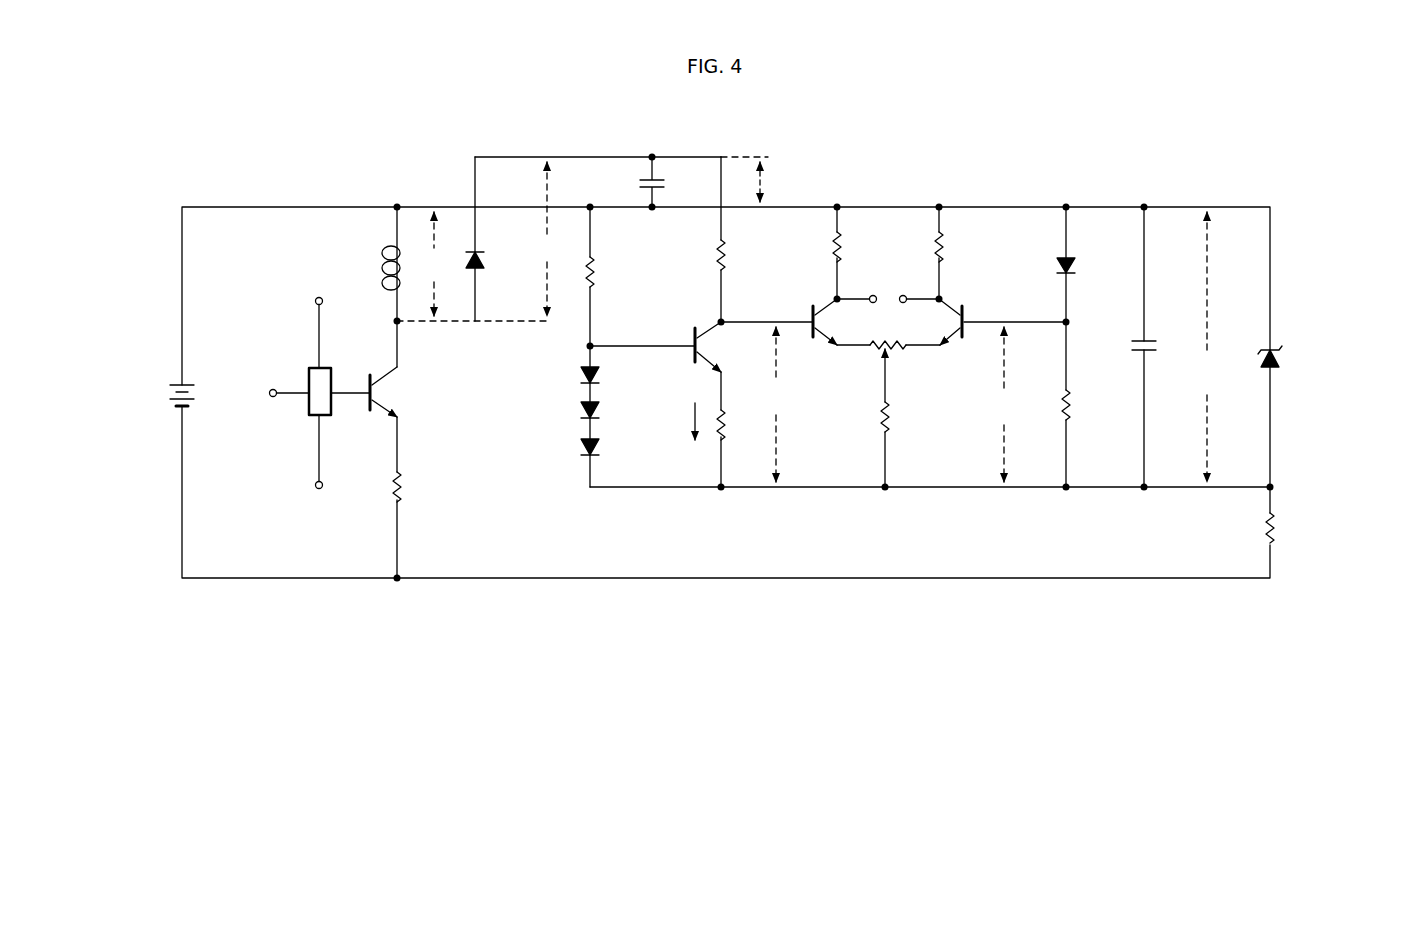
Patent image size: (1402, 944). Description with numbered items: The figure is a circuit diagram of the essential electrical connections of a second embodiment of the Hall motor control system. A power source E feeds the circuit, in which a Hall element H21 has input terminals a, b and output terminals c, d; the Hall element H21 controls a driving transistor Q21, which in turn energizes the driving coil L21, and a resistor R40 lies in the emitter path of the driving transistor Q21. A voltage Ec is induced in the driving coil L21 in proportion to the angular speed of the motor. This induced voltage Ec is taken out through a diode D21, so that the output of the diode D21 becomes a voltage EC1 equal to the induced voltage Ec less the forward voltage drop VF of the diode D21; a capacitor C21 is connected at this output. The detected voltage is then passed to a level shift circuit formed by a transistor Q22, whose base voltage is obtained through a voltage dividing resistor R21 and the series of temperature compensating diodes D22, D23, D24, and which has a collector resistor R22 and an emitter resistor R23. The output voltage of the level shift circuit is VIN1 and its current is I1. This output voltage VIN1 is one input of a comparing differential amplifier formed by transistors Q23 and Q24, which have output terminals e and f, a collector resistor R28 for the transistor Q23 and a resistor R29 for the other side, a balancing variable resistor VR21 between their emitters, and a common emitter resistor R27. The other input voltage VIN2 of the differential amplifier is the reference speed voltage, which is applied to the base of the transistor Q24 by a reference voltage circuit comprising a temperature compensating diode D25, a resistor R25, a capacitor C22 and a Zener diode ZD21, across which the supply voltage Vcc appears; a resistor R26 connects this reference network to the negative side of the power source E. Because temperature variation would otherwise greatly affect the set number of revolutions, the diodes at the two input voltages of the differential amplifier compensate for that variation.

The power source E is at (196, 391).
The driving coil L21 is at (384, 270).
The diode D21 is at (481, 251).
The capacitor C21 is at (660, 186).
The induced voltage Ec is at (431, 264).
The forward voltage drop VF is at (543, 239).
The diode output voltage EC1 is at (781, 182).
The input terminal a is at (311, 329).
The input terminal b is at (311, 457).
The output terminal c is at (287, 383).
The output terminal d is at (350, 382).
The output terminal e is at (872, 288).
The output terminal f is at (906, 287).
The Hall element H21 is at (311, 406).
The driving transistor Q21 is at (378, 393).
The resistor R40 is at (403, 481).
The voltage dividing resistor R21 is at (595, 275).
The collector resistor R22 is at (726, 268).
The transistor Q22 is at (703, 310).
The temperature compensating diode D22 is at (581, 376).
The temperature compensating diode D23 is at (581, 411).
The temperature compensating diode D24 is at (581, 448).
The emitter resistor R23 is at (726, 413).
The current I1 is at (692, 410).
The output voltage of level shift circuit VIN1 is at (778, 404).
The input voltage 2 VIN2 is at (1006, 404).
The transistor Q23 is at (820, 347).
The transistor Q24 is at (958, 347).
The resistor R29 is at (842, 250).
The collector resistor R28 is at (944, 245).
The balancing variable resistor VR21 is at (889, 355).
The common emitter resistor R27 is at (890, 410).
The temperature compensating diode D25 is at (1072, 268).
The resistor R25 is at (1071, 405).
The capacitor C22 is at (1132, 345).
The supply voltage Vcc is at (1205, 347).
The Zener diode ZD21 is at (1280, 358).
The resistor R26 is at (1276, 518).